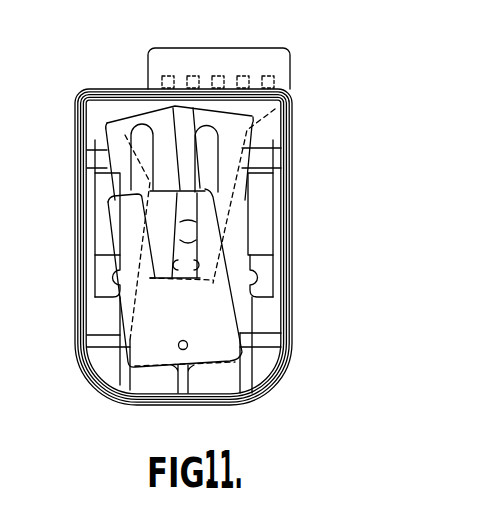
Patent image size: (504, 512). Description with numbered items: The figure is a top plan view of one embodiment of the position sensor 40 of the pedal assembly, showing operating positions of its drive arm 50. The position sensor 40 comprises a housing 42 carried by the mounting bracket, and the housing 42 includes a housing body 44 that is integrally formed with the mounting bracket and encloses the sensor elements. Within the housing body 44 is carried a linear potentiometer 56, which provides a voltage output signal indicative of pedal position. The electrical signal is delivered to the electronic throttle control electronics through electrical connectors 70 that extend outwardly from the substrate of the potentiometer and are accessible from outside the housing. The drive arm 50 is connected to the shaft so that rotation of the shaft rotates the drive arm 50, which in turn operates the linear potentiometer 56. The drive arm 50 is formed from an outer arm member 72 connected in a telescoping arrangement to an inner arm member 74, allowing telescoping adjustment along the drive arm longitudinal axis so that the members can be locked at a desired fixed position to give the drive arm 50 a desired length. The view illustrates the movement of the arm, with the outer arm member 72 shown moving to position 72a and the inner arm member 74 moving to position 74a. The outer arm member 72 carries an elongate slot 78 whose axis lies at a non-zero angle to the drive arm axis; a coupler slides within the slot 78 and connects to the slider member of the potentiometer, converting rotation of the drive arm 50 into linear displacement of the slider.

The position sensor 40 is at (298, 72).
The housing 42 is at (292, 146).
The housing body 44 is at (288, 215).
The drive arm 50 is at (134, 312).
The linear potentiometer 56 is at (106, 180).
The electrical connectors 70 is at (221, 70).
The outer arm member 72 is at (237, 320).
The outer arm member position 72a is at (240, 248).
The inner arm member 74 is at (118, 138).
The inner arm member position 74a is at (295, 98).
The slot 78 is at (143, 125).